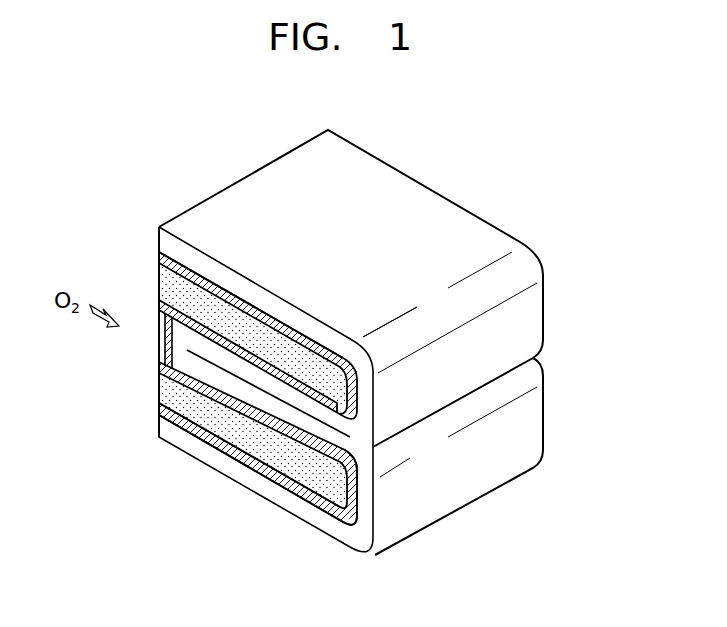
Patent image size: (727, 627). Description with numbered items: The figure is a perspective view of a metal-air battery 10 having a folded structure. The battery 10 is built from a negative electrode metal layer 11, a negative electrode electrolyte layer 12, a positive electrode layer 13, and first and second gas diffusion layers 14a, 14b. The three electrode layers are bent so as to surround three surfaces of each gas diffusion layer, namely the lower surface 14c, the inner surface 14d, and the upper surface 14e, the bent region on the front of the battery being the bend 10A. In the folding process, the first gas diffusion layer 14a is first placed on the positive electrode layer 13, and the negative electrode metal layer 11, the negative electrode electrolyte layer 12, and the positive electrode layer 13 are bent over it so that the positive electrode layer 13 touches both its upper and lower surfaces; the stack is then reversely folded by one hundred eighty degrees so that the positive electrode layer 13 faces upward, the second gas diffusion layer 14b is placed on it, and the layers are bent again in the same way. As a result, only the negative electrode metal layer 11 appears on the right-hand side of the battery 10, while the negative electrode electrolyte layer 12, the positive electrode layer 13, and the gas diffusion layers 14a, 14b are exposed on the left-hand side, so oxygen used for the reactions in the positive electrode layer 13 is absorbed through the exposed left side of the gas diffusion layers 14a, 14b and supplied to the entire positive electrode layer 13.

The metal-air battery 10 is at (501, 174).
The bend 10A is at (362, 314).
The negative electrode metal layer 11 is at (158, 237).
The negative electrode electrolyte layer 12 is at (158, 258).
The positive electrode layer 13 is at (158, 272).
The first gas diffusion layer 14a is at (160, 383).
The second gas diffusion layer 14b is at (160, 297).
The lower surface 14c is at (327, 491).
The inner surface 14d is at (348, 503).
The upper surface 14e is at (353, 450).